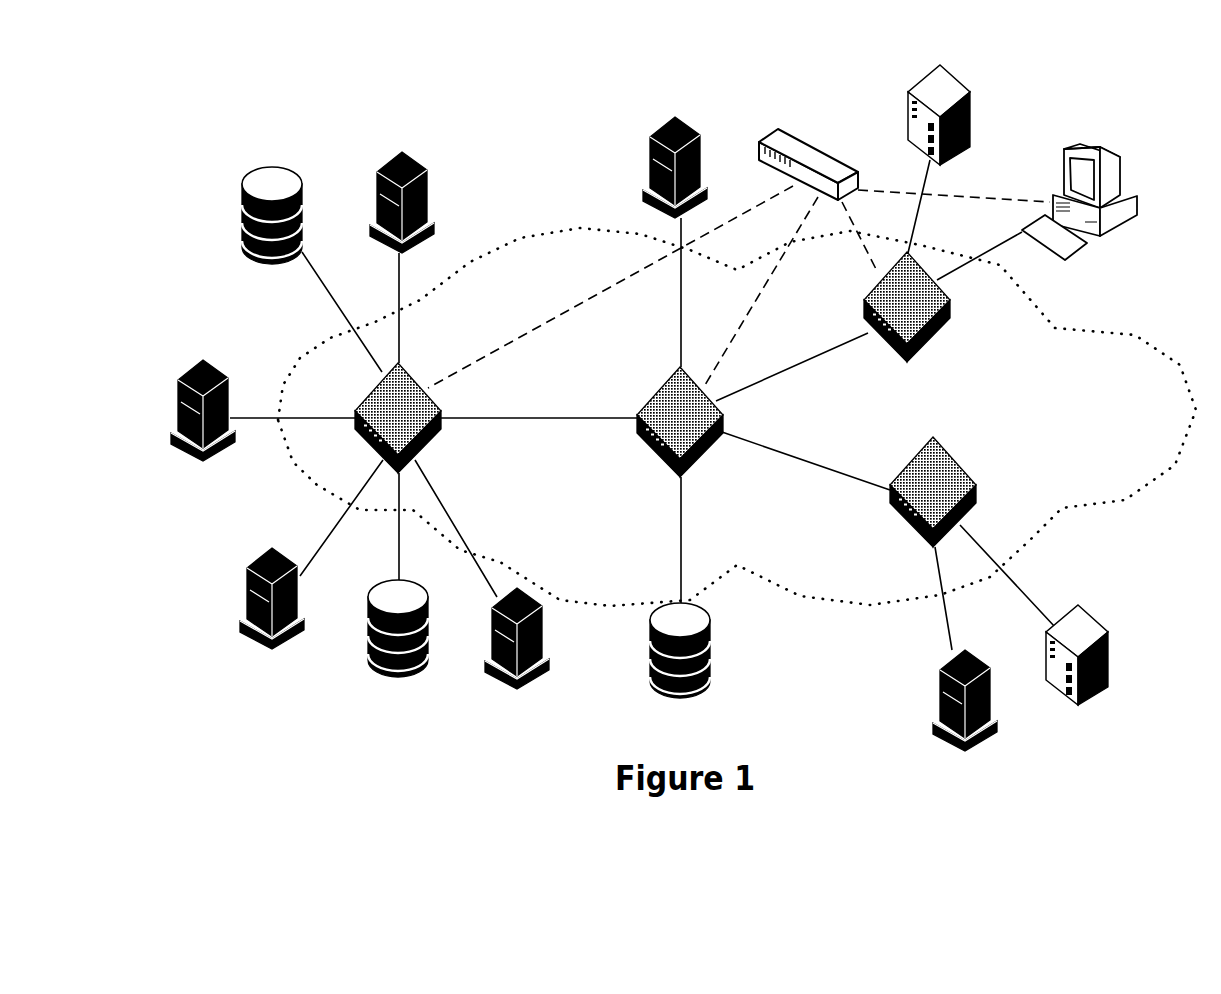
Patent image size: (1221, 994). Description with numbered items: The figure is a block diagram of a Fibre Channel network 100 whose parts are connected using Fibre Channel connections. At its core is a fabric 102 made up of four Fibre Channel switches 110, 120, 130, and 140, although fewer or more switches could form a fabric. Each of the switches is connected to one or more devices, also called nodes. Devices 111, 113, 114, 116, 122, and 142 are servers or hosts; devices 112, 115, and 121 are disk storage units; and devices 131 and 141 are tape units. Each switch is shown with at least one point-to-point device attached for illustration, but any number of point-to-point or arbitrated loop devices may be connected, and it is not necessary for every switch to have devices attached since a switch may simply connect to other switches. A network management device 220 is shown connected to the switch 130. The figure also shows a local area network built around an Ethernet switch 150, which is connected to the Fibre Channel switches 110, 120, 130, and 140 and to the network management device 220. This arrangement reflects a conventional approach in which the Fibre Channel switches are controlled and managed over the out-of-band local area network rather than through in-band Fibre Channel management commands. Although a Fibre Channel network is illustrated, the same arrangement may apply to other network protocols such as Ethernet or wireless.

The Fibre Channel network 100 is at (540, 132).
The fabric 102 is at (584, 290).
The Fibre Channel switch 110 is at (484, 484).
The device 111 is at (570, 670).
The device 112 is at (400, 743).
The device 113 is at (245, 699).
The device 114 is at (174, 512).
The device 115 is at (215, 167).
The device 116 is at (412, 137).
The Fibre Channel switch 120 is at (612, 369).
The device 121 is at (754, 699).
The device 122 is at (590, 144).
The Fibre Channel switch 130 is at (952, 383).
The device 131 is at (852, 94).
The Fibre Channel switch 140 is at (853, 569).
The device 141 is at (1109, 612).
The device 142 is at (882, 727).
The Ethernet switch 150 is at (724, 120).
The network management device 220 is at (1127, 133).